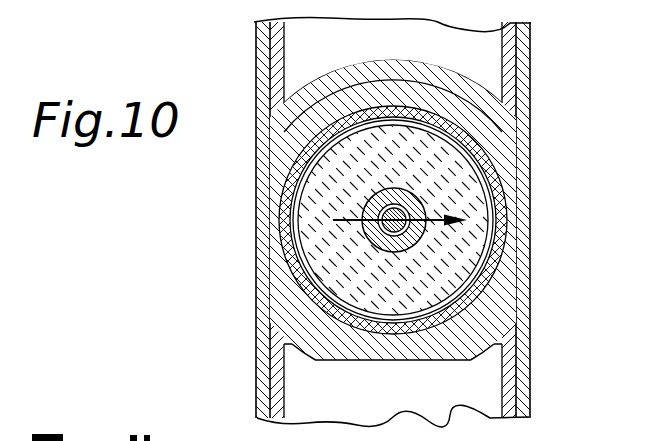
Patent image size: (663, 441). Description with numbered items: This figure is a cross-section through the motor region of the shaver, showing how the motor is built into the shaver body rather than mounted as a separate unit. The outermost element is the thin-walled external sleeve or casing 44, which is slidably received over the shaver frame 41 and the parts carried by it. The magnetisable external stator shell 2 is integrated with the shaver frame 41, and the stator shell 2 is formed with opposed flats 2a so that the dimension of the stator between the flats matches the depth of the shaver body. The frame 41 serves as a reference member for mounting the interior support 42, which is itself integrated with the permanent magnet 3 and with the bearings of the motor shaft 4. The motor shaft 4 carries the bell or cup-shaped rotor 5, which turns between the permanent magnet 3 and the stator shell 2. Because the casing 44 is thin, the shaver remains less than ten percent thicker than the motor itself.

The external stator shell 2 is at (505, 168).
The opposed flats 2a is at (518, 263).
The permanent magnet 3 is at (422, 298).
The motor shaft 4 is at (397, 232).
The bell or cup-shaped rotor 5 is at (468, 293).
The shaver frame 41 is at (290, 332).
The interior support 42 is at (373, 238).
The external sleeve or casing 44 is at (520, 112).